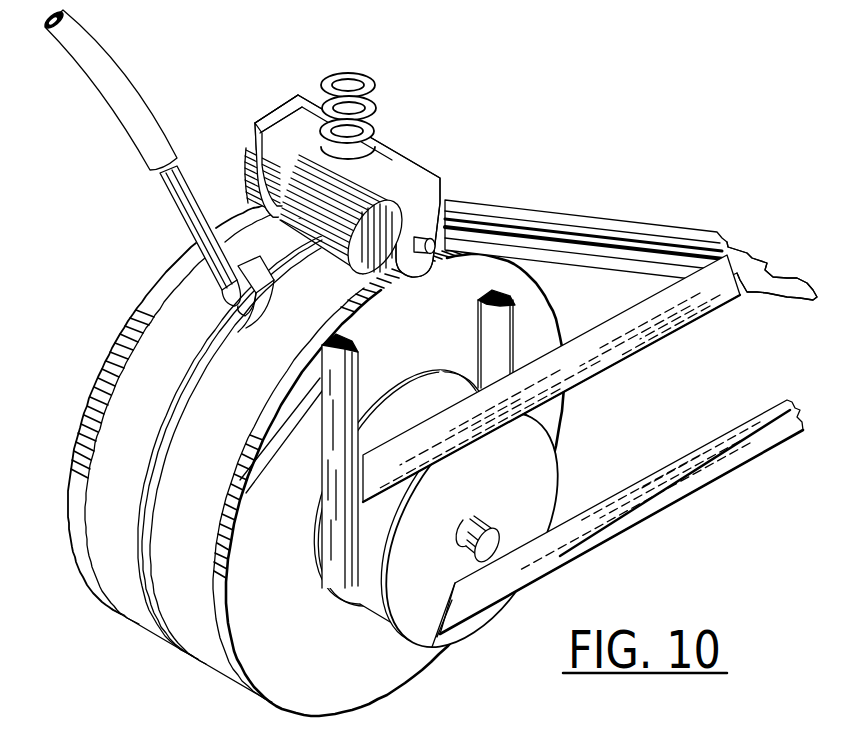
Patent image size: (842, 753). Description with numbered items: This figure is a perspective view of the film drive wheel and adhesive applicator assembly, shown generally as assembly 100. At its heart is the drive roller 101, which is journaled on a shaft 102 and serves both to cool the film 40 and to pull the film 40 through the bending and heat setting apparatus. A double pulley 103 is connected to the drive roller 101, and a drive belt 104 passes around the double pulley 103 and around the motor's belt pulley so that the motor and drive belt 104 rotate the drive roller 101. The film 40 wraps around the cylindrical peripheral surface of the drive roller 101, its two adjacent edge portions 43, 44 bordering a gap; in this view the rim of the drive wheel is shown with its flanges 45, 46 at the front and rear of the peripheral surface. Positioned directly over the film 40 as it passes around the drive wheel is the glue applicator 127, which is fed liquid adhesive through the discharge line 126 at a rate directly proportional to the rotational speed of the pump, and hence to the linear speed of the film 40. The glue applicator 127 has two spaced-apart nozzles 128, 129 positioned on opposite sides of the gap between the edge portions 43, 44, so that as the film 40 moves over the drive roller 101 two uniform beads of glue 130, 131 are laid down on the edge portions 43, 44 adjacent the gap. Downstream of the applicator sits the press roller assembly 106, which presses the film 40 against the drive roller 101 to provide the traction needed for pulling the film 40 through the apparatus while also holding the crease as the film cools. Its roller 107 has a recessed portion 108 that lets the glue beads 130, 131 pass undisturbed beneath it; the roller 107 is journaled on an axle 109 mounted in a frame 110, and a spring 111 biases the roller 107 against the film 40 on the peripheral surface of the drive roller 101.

The film 40 is at (617, 216).
The edge portion 43 is at (165, 430).
The edge portion 44 is at (152, 477).
The rear ratchet flange 45 is at (100, 372).
The front ratchet flange 46 is at (213, 580).
The clamp assembly 100 is at (370, 178).
The drive roller 101 is at (406, 672).
The shaft 102 is at (490, 556).
The double pulley 103 is at (437, 637).
The drive belt 104 is at (622, 528).
The press roller assembly 106 is at (262, 113).
The roller 107 is at (249, 156).
The recessed portion 108 is at (300, 200).
The axle 109 is at (436, 228).
The frame 110 is at (408, 170).
The spring 111 is at (378, 100).
The discharge line 126 is at (90, 78).
The glue applicator 127 is at (178, 203).
The nozzle 128 is at (235, 300).
The nozzle 129 is at (228, 322).
The bead of glue 130 is at (262, 255).
The bead of glue 131 is at (255, 263).